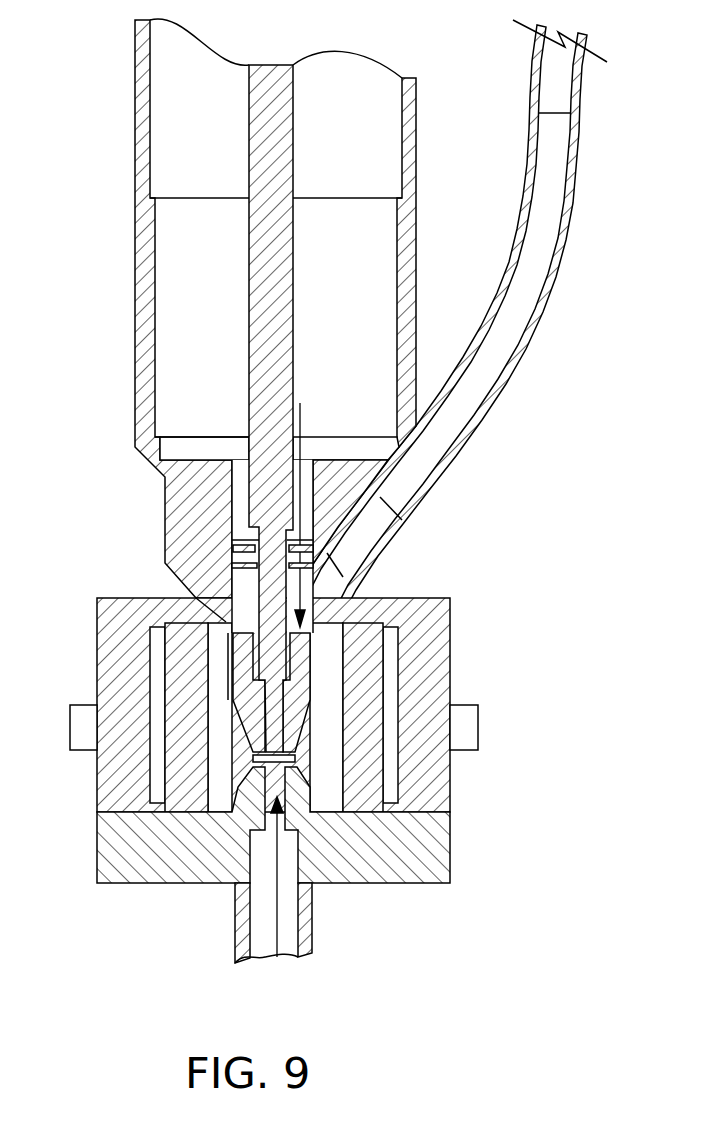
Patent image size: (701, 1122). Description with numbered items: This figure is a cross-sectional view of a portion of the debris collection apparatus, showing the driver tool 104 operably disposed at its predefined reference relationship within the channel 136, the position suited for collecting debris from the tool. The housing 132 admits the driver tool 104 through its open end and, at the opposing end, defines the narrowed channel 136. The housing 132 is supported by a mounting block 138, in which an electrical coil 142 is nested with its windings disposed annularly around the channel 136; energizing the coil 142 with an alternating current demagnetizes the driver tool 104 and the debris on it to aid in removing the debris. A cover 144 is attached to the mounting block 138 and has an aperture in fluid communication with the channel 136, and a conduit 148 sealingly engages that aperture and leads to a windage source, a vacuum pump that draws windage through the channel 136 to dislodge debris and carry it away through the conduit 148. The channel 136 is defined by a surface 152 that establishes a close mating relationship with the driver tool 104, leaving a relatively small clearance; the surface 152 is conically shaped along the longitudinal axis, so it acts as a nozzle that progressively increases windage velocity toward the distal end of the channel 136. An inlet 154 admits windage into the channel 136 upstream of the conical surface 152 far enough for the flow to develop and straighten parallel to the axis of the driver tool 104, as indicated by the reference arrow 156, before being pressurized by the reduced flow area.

The driver tool 104 is at (273, 628).
The housing 132 is at (137, 432).
The channel 136 is at (277, 957).
The mounting block 138 is at (450, 598).
The electrical coil 142 is at (367, 717).
The cover 144 is at (425, 850).
The conduit 148 is at (312, 925).
The surface 152 is at (284, 710).
The inlet 154 is at (242, 477).
The reference arrow 156 is at (305, 427).